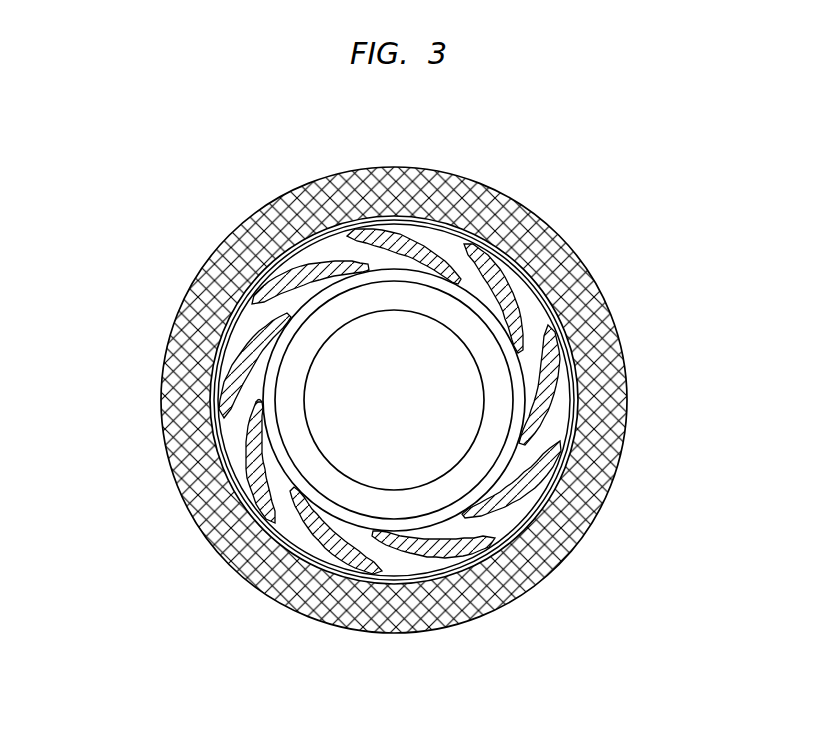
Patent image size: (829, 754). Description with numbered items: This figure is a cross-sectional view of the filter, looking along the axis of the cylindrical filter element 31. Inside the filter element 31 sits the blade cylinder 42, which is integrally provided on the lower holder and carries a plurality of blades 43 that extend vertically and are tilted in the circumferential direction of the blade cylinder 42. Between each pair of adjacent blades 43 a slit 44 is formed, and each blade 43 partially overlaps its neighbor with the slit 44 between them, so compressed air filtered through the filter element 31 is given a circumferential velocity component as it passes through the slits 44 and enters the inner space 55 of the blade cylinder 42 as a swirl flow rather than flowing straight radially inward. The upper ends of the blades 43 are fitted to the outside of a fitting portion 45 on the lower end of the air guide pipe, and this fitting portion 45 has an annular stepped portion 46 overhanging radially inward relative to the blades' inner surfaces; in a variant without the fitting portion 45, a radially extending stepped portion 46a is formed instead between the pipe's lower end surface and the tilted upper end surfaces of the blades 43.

The filter element 31 is at (593, 483).
The blade cylinder 42 is at (446, 246).
The blade 43 is at (503, 298).
The slit 44 is at (528, 362).
The fitting portion 45 is at (313, 303).
The annular stepped portion 46 is at (487, 482).
The stepped portion 46a is at (252, 390).
The inner space 55 is at (411, 460).